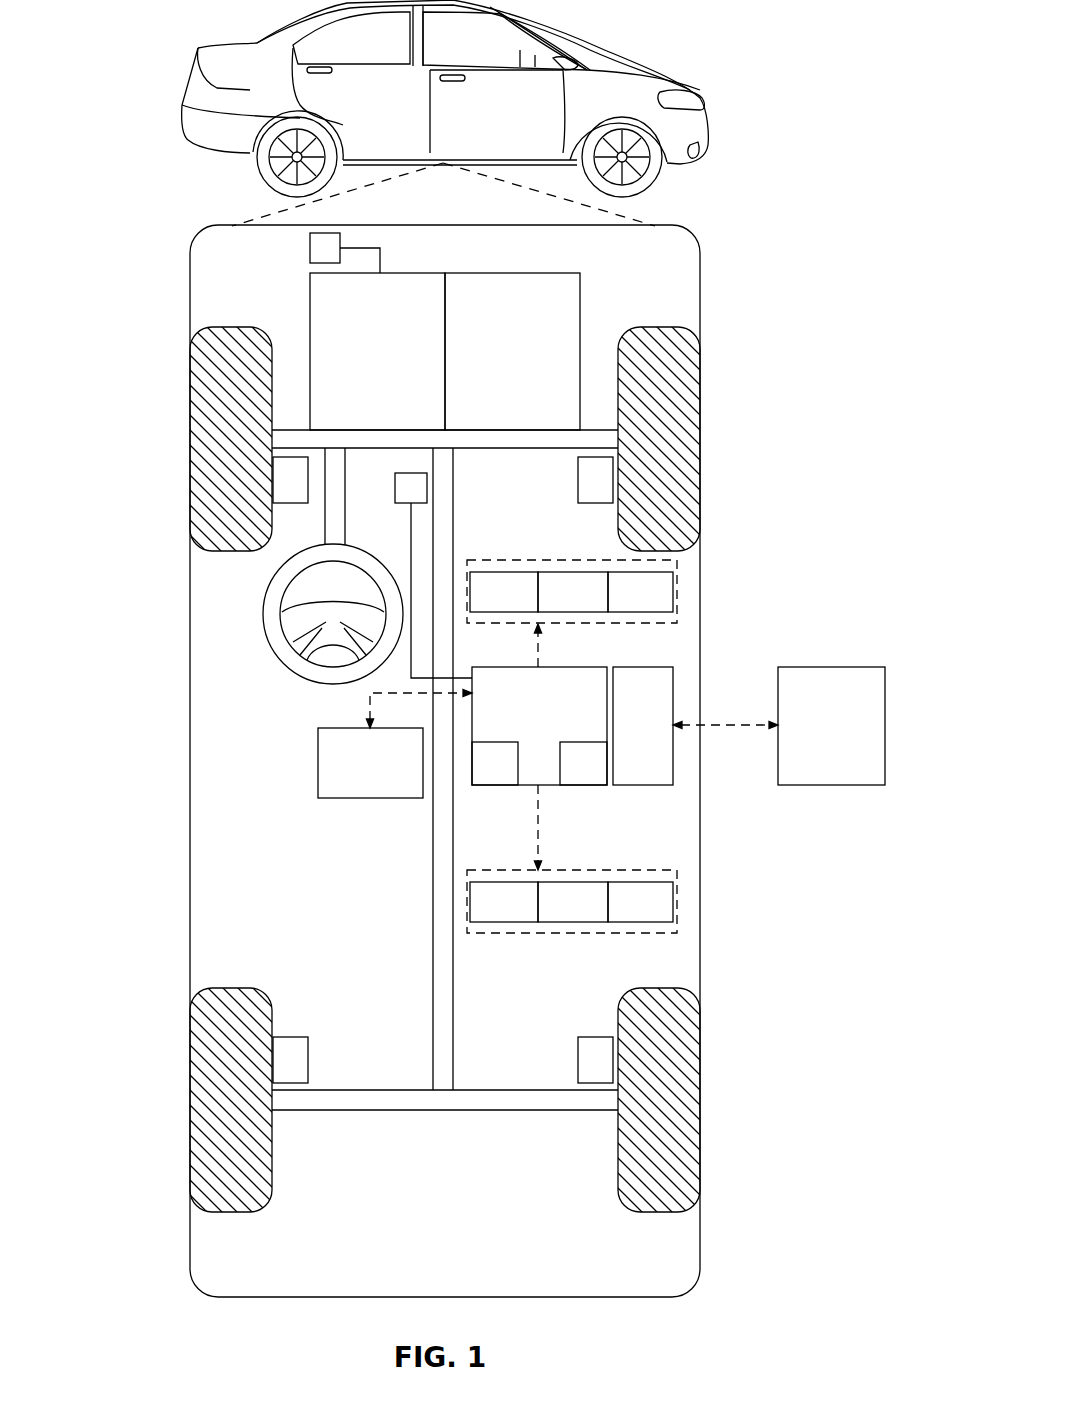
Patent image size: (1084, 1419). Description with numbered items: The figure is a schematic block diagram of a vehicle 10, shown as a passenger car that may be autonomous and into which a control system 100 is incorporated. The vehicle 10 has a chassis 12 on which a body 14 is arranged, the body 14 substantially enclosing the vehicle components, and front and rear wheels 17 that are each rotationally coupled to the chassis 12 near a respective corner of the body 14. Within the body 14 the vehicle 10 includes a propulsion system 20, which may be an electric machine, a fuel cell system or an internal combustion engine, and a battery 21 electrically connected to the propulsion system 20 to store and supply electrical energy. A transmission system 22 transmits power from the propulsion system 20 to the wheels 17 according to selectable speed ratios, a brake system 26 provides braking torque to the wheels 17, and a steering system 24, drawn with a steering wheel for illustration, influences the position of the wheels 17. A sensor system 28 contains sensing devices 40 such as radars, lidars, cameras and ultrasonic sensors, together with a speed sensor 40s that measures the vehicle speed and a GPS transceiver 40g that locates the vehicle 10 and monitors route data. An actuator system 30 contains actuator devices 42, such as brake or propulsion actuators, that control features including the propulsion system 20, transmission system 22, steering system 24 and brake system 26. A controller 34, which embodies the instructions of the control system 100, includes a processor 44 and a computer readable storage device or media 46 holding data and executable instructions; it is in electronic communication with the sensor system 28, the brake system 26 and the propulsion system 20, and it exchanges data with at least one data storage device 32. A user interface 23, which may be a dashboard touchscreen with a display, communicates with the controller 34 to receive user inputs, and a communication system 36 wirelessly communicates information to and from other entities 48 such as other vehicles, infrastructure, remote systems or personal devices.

The vehicle 10 is at (193, 79).
The control system 100 is at (795, 247).
The body 14 is at (190, 812).
The front and rear wheels 17 is at (230, 327).
The chassis 12 is at (433, 975).
The propulsion system 20 is at (360, 362).
The transmission system 22 is at (495, 362).
The battery 21 is at (310, 246).
The user interface 23 is at (396, 474).
The steering system 24 is at (317, 533).
The brake system 26 is at (274, 494).
The sensor system 28 is at (548, 560).
The sensing devices 40 is at (487, 605).
The speed sensor 40s is at (549, 605).
The GPS transceiver 40g is at (616, 605).
The actuator system 30 is at (545, 934).
The actuator devices 42 is at (487, 915).
The data storage device 32 is at (353, 777).
The controller 34 is at (523, 711).
The communication system 36 is at (626, 740).
The processor 44 is at (478, 777).
The computer readable storage device or media 46 is at (566, 777).
The other entities 48 is at (814, 740).